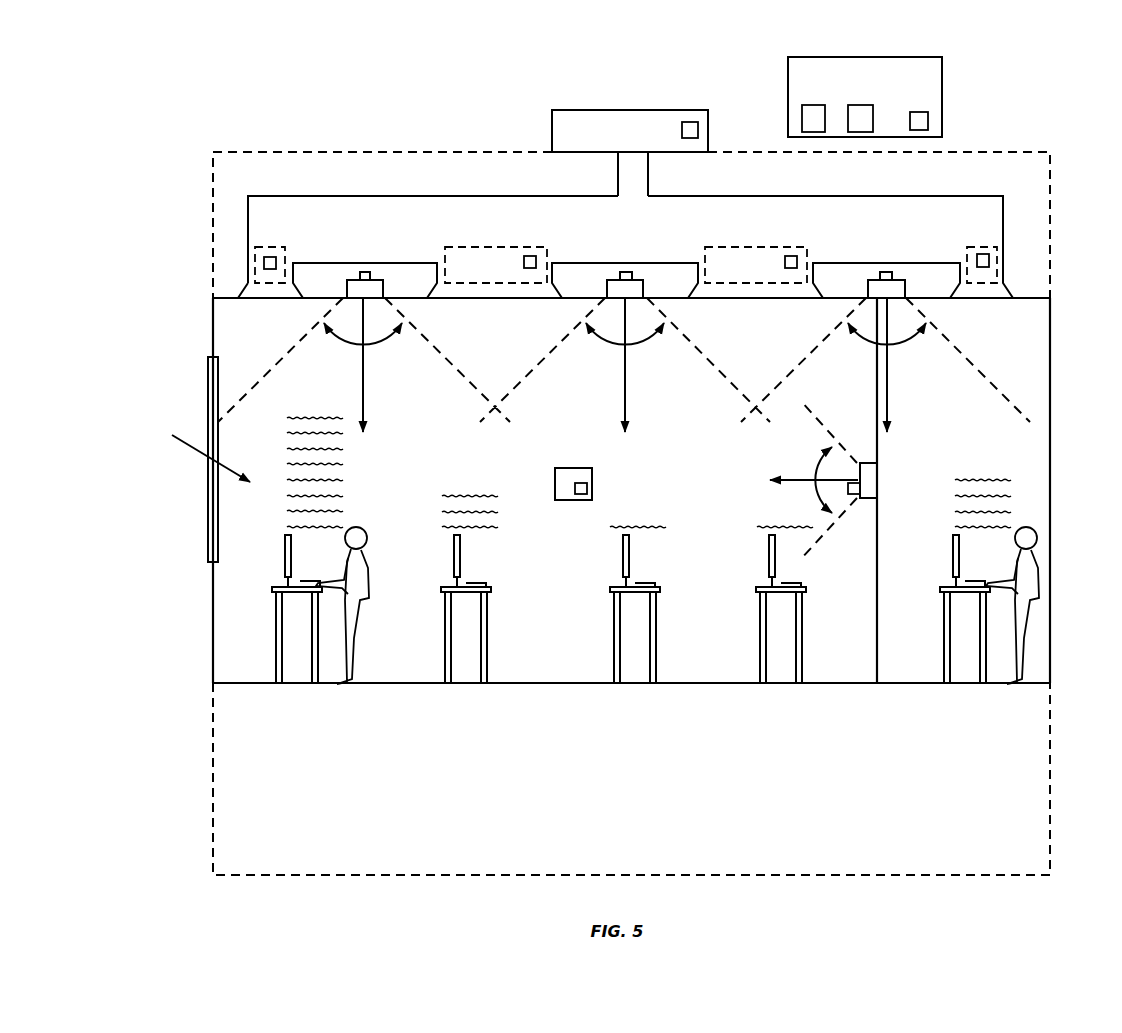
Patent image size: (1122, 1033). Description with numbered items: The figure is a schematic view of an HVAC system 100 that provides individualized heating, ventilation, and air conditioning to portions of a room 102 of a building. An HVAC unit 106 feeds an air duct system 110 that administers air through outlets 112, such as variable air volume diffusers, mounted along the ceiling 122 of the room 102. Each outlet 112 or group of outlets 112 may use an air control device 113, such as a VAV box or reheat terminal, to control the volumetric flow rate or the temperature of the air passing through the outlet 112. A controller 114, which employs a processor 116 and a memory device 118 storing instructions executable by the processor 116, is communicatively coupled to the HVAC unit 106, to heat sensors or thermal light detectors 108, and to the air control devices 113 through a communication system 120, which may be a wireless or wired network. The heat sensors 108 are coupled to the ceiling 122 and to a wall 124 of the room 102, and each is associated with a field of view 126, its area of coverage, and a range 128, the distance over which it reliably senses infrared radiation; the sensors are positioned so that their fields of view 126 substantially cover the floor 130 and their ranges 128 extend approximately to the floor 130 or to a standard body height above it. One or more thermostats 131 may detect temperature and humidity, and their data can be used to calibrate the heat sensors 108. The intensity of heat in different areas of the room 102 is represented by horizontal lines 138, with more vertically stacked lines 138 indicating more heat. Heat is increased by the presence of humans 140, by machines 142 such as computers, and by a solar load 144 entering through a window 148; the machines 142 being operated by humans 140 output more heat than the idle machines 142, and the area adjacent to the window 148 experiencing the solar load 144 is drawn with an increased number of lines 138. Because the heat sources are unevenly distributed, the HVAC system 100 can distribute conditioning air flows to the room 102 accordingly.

The HVAC system 100 is at (258, 68).
The room 102 is at (415, 152).
The HVAC unit 106 is at (552, 130).
The heat sensor or thermal light detector 108 is at (385, 290).
The air duct system 110 is at (668, 185).
The outlet 112 is at (268, 300).
The air control device 113 is at (265, 250).
The controller 114 is at (868, 57).
The processor 116 is at (802, 118).
The memory device 118 is at (860, 137).
The communication system 120 is at (688, 122).
The ceiling 122 is at (678, 300).
The wall 124 is at (878, 640).
The field of view 126 is at (350, 340).
The range 128 is at (365, 385).
The floor 130 is at (700, 685).
The thermostat 131 is at (562, 468).
The horizontal lines 138 is at (352, 470).
The human 140 is at (370, 583).
The machine 142 is at (305, 548).
The solar load 144 is at (200, 450).
The window 148 is at (208, 510).